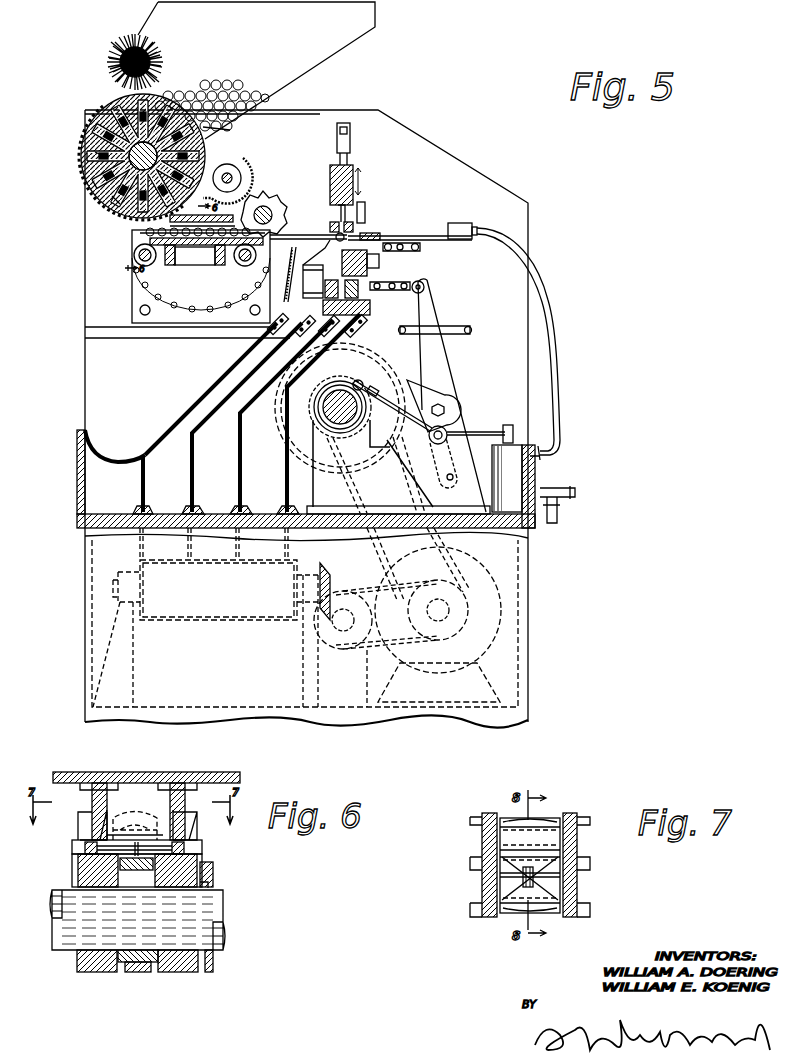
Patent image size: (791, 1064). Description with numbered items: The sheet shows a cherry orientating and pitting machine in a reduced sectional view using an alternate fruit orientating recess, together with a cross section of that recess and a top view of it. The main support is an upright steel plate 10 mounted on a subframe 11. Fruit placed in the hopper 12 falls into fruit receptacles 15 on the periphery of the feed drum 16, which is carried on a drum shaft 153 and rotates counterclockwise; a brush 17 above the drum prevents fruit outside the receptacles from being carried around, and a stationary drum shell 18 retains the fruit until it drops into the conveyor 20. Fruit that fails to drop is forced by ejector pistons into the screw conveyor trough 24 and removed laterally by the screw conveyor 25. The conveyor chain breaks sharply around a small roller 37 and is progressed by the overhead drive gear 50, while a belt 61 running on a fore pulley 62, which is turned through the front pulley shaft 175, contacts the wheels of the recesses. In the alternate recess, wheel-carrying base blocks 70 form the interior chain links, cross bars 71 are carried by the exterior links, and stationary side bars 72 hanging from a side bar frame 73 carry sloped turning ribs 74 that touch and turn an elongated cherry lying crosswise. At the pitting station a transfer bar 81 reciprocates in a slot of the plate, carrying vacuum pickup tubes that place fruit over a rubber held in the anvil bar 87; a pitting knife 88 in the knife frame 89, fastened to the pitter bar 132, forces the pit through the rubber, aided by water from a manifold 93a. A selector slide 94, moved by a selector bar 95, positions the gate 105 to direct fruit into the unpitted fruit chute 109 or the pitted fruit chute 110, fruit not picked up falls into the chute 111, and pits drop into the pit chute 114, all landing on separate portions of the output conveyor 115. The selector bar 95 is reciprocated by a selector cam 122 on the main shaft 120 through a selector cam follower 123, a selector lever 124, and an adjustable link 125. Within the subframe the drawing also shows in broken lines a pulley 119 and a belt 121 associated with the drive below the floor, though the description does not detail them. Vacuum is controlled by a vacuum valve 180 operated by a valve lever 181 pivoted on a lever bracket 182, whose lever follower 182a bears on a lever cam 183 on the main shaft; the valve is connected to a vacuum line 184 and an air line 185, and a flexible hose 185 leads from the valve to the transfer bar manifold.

In FIG. 5, the upright steel plate 10 is at (458, 192).
In FIG. 5, the subframe 11 is at (528, 576).
In FIG. 5, the hopper 12 is at (285, 38).
In FIG. 5, the fruit receptacle 15 is at (112, 108).
In FIG. 5, the feed drum 16 is at (212, 146).
In FIG. 5, the brush 17 is at (150, 45).
In FIG. 5, the stationary drum shell 18 is at (125, 205).
In FIG. 5, the conveyor 20 is at (208, 298).
In FIG. 5, the screw conveyor trough 24 is at (248, 182).
In FIG. 5, the screw conveyor 25 is at (227, 173).
In FIG. 5, the small roller 37 is at (307, 238).
In FIG. 5, the drive gear 50 is at (264, 205).
In FIG. 5, the belt 61 is at (212, 268).
In FIG. 6, the belt 61 is at (140, 972).
In FIG. 6, the fore pulley 62 is at (122, 958).
In FIG. 6, the base block 70 is at (214, 870).
In FIG. 6, the cross bar 71 is at (123, 818).
In FIG. 7, the cross bar 71 is at (545, 838).
In FIG. 6, the stationary side bar 72 is at (96, 785).
In FIG. 7, the stationary side bar 72 is at (482, 840).
In FIG. 6, the side bar frame 73 is at (215, 775).
In FIG. 6, the turning rib 74 is at (80, 824).
In FIG. 7, the turning rib 74 is at (470, 864).
In FIG. 5, the transfer bar 81 is at (372, 236).
In FIG. 5, the anvil bar 87 is at (392, 238).
In FIG. 5, the pitting knife 88 is at (335, 225).
In FIG. 5, the knife frame 89 is at (355, 180).
In FIG. 5, the manifold 93a is at (380, 260).
In FIG. 5, the selector slide 94 is at (305, 296).
In FIG. 5, the selector bar 95 is at (378, 283).
In FIG. 5, the gate 105 is at (294, 278).
In FIG. 5, the unpitted fruit chute 109 is at (180, 458).
In FIG. 5, the pitted fruit chute 110 is at (227, 458).
In FIG. 5, the chute for unpicked-up fruit 111 is at (132, 456).
In FIG. 5, the pit chute 114 is at (272, 458).
In FIG. 5, the output conveyor 115 is at (228, 597).
In FIG. 5, the pulley 119 is at (470, 570).
In FIG. 5, the main shaft 120 is at (342, 422).
In FIG. 5, the belt 121 is at (362, 548).
In FIG. 5, the selector cam 122 is at (385, 358).
In FIG. 5, the selector cam follower 123 is at (428, 388).
In FIG. 5, the selector lever 124 is at (440, 352).
In FIG. 5, the adjustable link 125 is at (420, 283).
In FIG. 5, the pitter bar 132 is at (343, 140).
In FIG. 5, the drum shaft 153 is at (95, 168).
In FIG. 6, the front pulley shaft 175 is at (90, 925).
In FIG. 5, the vacuum valve 180 is at (512, 474).
In FIG. 5, the valve lever 181 is at (475, 432).
In FIG. 5, the lever bracket 182 is at (438, 480).
In FIG. 5, the lever follower 182a is at (372, 378).
In FIG. 5, the lever cam 183 is at (356, 382).
In FIG. 5, the vacuum line 184 is at (558, 508).
In FIG. 5, the air line 185 is at (560, 330).